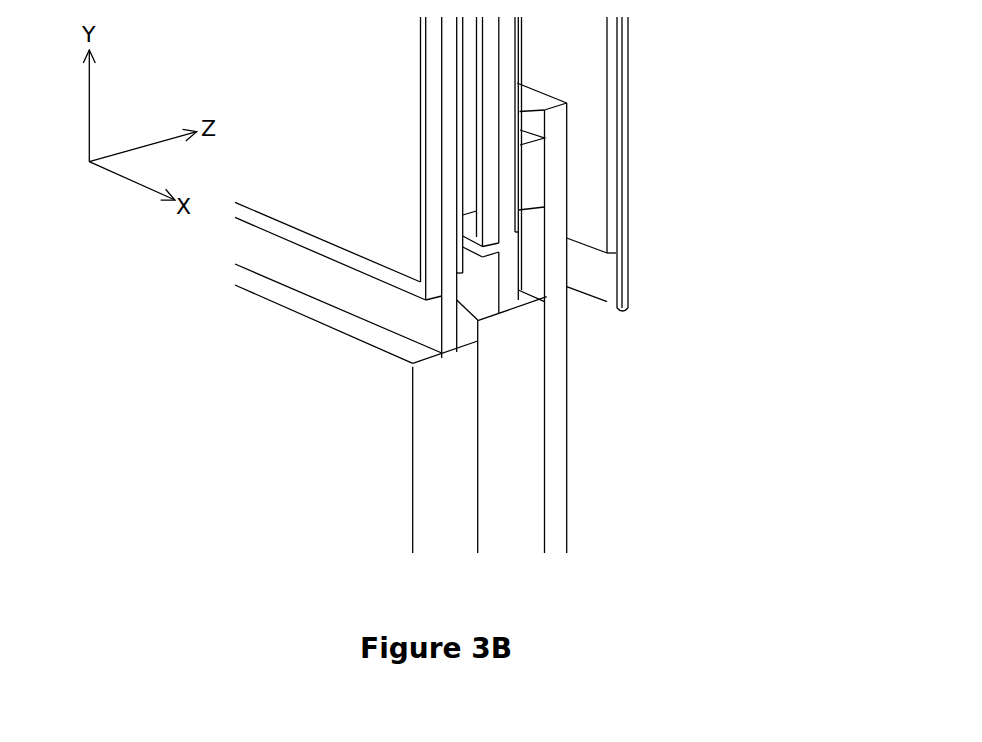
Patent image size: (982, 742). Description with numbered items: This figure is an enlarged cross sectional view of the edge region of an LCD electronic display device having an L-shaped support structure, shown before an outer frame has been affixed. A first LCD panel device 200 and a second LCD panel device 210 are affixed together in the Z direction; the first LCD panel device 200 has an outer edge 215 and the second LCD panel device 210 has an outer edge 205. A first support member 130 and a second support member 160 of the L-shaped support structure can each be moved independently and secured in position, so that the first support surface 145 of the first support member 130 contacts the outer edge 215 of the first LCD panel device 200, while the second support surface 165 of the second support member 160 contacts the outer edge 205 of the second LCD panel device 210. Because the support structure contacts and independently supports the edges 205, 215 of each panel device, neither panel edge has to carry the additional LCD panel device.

The first support member 130 is at (432, 532).
The first support surface 145 is at (377, 344).
The second support member 160 is at (530, 532).
The second support surface 165 is at (530, 302).
The first LCD panel device 200 is at (450, 192).
The outer edge of the second LCD panel device 205 is at (510, 318).
The second LCD panel device 210 is at (506, 76).
The outer edge of the first LCD panel device 215 is at (452, 358).